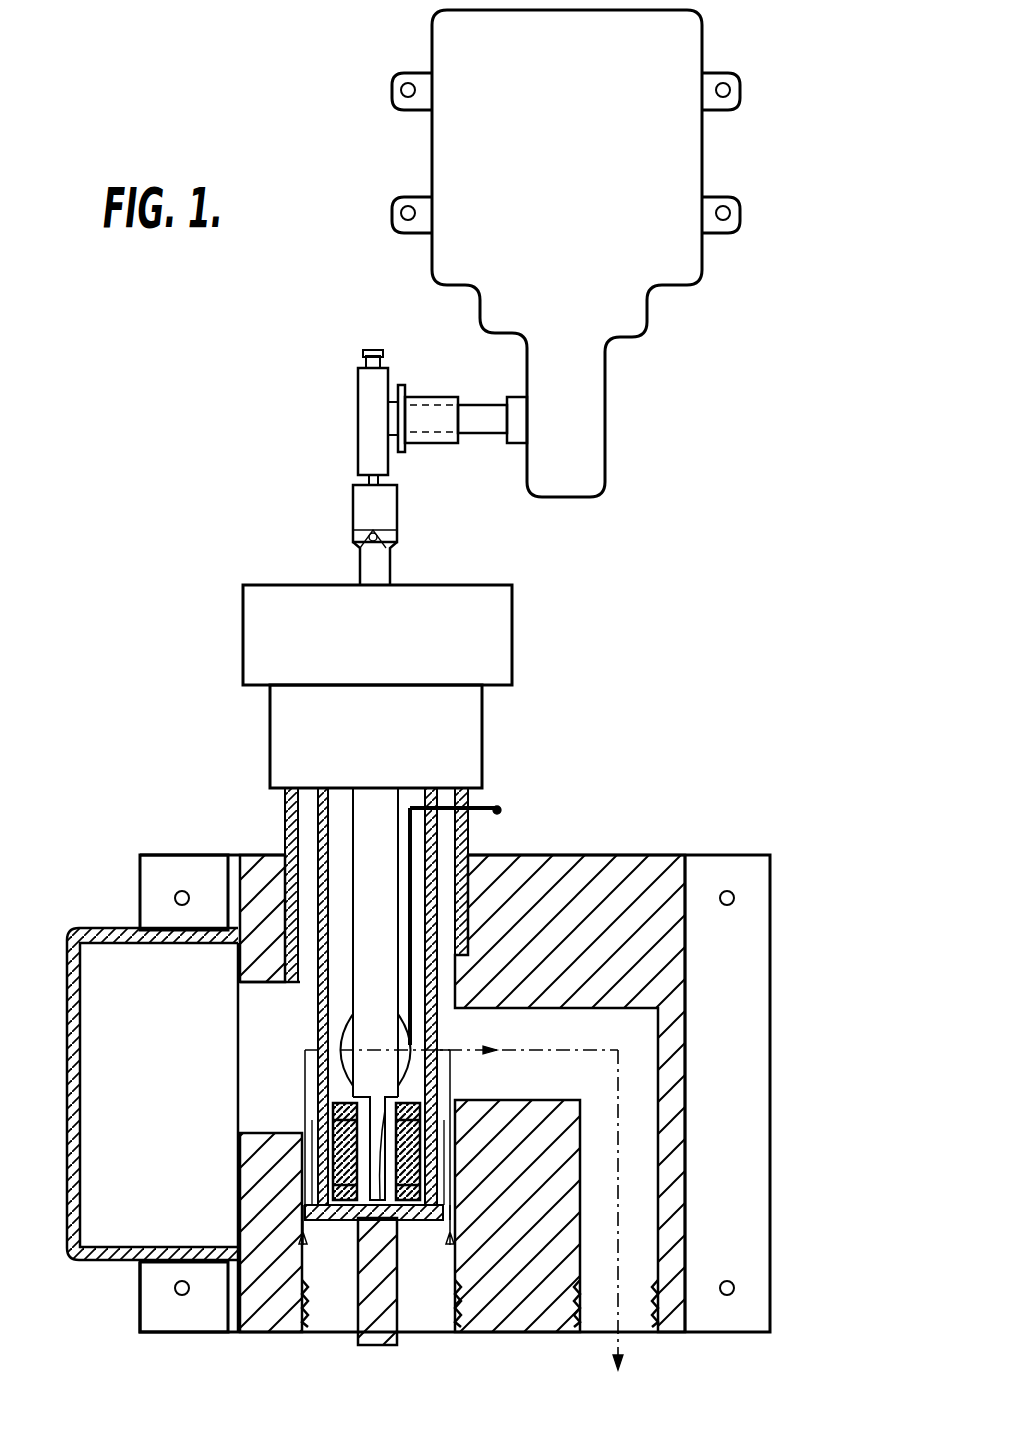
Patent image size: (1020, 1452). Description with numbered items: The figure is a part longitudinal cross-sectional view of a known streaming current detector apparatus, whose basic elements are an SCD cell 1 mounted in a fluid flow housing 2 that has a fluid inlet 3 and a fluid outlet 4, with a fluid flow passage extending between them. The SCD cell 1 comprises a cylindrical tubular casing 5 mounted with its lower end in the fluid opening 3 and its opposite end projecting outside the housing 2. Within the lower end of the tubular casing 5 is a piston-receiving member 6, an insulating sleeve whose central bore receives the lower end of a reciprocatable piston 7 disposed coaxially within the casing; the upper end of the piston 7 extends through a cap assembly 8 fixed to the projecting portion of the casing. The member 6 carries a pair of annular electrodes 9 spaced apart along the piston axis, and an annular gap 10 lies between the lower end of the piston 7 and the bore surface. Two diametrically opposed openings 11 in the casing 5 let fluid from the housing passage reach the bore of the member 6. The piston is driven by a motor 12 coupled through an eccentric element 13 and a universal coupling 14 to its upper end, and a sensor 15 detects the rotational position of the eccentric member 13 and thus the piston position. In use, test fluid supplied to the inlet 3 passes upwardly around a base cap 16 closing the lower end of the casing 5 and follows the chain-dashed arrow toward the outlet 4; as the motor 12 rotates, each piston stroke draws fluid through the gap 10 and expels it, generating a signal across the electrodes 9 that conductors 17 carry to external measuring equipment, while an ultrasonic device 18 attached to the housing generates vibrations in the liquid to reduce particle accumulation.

The SCD cell 1 is at (453, 1033).
The fluid flow housing 2 is at (707, 1213).
The fluid inlet 3 is at (433, 1313).
The fluid outlet 4 is at (623, 1310).
The cylindrical tubular casing 5 is at (322, 1015).
The piston-receiving member 6 is at (305, 1130).
The reciprocatable piston 7 is at (368, 830).
The cap assembly 8 is at (253, 627).
The annular electrodes 9 is at (372, 1200).
The annular gap 10 is at (333, 1183).
The openings 11 is at (423, 1056).
The motor 12 is at (582, 482).
The eccentric element 13 is at (368, 436).
The universal coupling 14 is at (390, 517).
The sensor 15 is at (373, 349).
The base cap 16 is at (358, 1338).
The conductors 17 is at (485, 802).
The ultrasonic device 18 is at (100, 1262).